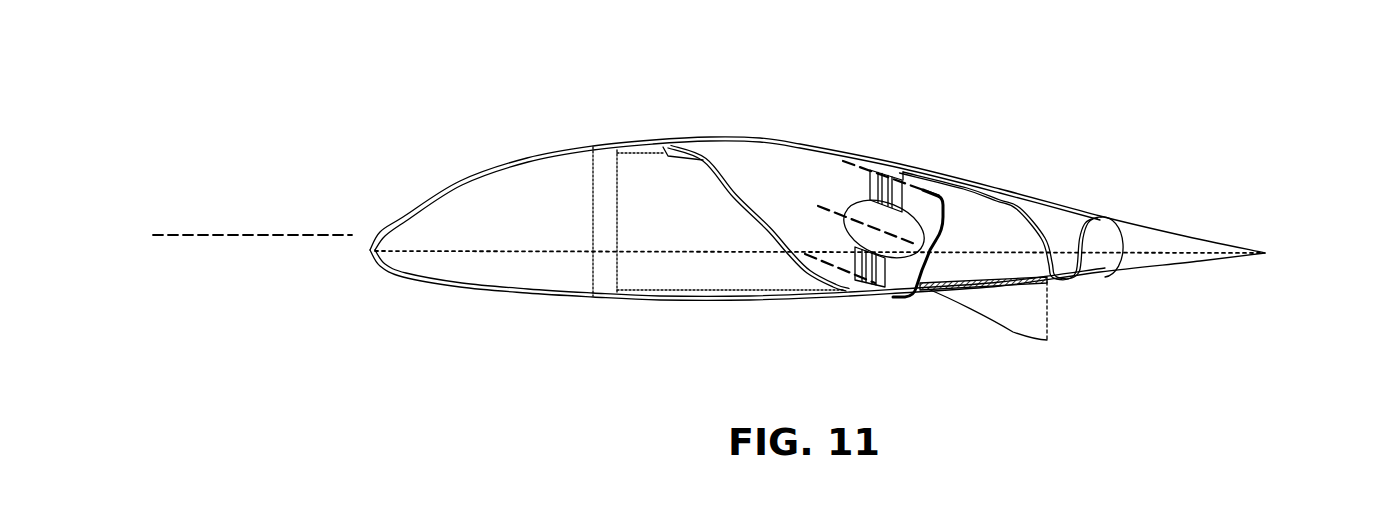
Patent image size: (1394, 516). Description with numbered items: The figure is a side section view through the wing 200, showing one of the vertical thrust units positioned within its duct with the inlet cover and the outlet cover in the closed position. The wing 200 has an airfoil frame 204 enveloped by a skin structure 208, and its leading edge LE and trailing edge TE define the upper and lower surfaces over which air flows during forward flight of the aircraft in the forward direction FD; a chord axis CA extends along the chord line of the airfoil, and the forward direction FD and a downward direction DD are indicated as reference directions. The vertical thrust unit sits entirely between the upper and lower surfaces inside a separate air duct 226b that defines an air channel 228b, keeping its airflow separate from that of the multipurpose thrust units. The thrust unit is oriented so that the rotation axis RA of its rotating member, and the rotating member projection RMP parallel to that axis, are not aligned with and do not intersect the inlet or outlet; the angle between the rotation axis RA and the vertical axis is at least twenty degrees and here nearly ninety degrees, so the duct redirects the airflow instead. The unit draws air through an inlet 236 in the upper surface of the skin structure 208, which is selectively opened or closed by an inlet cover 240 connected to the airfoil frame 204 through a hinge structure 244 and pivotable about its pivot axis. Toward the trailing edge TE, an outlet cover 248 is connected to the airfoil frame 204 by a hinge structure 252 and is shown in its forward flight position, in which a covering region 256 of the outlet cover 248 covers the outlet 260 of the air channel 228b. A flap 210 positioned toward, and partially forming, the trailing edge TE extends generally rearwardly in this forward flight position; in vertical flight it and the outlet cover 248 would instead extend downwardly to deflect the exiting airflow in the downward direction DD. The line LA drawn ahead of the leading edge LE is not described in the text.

The wing 200 is at (358, 70).
The airfoil frame 204 is at (605, 260).
The skin structure 208 is at (596, 145).
The flap 210 is at (1167, 253).
The air duct 226b is at (738, 207).
The air channel 228b is at (822, 197).
The inlet 236 is at (763, 160).
The inlet cover 240 is at (725, 143).
The hinge structure 244 is at (800, 155).
The outlet cover 248 is at (973, 315).
The hinge structure 252 is at (923, 283).
The covering region 256 is at (1000, 283).
The outlet 260 is at (1008, 267).
The rotation axis RA is at (840, 212).
The rotating member projection RMP is at (936, 245).
The chord axis CA is at (1112, 250).
The forward direction FD is at (150, 118).
The downward direction DD is at (242, 118).
The longitudinal axis LA is at (226, 237).
The leading edge LE is at (354, 249).
The trailing edge TE is at (1290, 252).